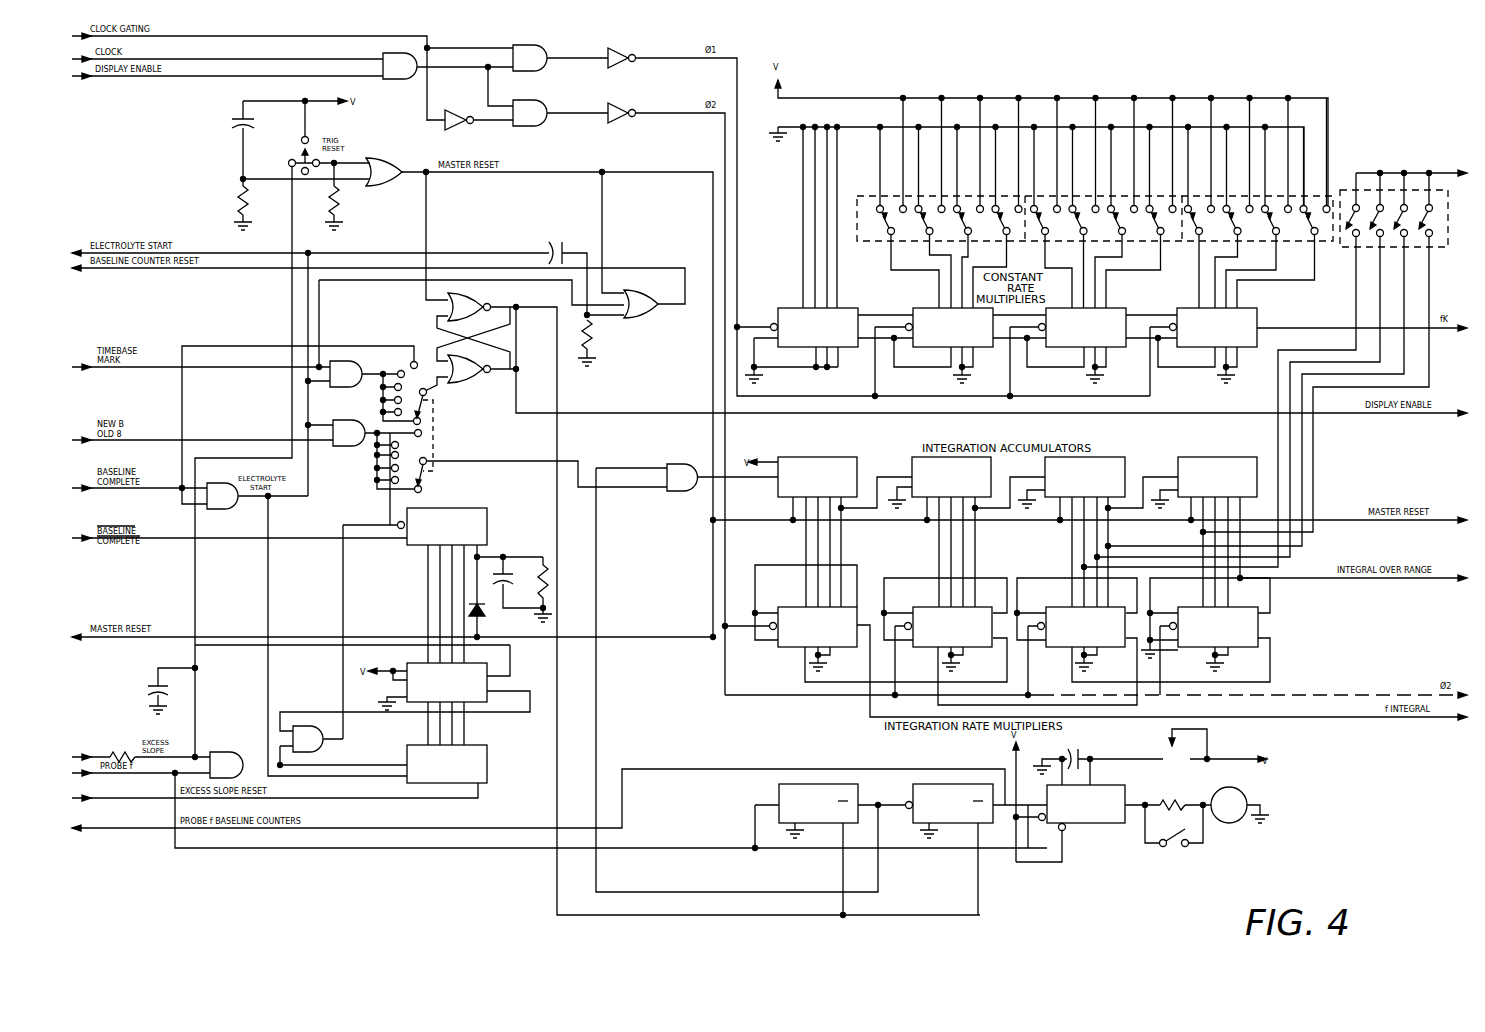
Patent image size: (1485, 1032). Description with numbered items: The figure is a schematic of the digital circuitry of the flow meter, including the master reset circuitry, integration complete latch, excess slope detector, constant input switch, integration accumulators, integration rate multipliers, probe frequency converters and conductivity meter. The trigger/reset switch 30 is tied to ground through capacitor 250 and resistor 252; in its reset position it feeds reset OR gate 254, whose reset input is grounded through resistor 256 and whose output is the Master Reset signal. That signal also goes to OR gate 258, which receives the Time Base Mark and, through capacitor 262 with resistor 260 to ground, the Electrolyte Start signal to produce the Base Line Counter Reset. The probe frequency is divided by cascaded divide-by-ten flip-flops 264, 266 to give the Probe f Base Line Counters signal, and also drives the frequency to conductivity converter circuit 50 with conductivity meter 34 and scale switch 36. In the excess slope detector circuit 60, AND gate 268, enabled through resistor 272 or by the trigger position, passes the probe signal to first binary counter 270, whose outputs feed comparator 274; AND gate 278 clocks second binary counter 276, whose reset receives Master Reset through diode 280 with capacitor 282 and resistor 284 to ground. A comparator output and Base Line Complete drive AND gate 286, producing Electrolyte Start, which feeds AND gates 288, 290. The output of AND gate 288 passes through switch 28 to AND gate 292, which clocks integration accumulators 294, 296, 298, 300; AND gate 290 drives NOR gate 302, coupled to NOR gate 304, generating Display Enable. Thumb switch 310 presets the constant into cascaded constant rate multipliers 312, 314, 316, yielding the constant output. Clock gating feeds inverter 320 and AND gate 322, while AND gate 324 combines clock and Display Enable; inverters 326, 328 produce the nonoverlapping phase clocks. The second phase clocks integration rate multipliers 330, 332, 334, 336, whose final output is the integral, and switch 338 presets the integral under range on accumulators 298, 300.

The capacitor 250 is at (236, 120).
The trigger/reset switch 30 is at (299, 158).
The resistor 252 is at (240, 206).
The reset OR gate 254 is at (386, 166).
The resistor 256 is at (339, 202).
The AND gate 324 is at (402, 76).
The inverter 326 is at (626, 54).
The AND gate 322 is at (534, 110).
The inverter 328 is at (629, 108).
The inverter 320 is at (461, 118).
The binary coded decimal thumb switch 310 is at (1142, 83).
The switch 338 is at (1348, 190).
The capacitor 262 is at (556, 242).
The OR gate 258 is at (646, 310).
The resistor 260 is at (590, 342).
The NOR gate 304 is at (438, 303).
The NOR gate 302 is at (467, 374).
The AND gate 290 is at (360, 379).
The AND gate 288 is at (364, 439).
The AND gate 286 is at (228, 504).
The switch 28 is at (440, 446).
The AND gate 292 is at (676, 466).
The integration accumulator 294 is at (832, 460).
The integration accumulator 296 is at (920, 456).
The integration accumulator 298 is at (1112, 466).
The integration accumulator 300 is at (1214, 468).
The second binary counter 276 is at (462, 515).
The excess slope detector circuit 60 is at (493, 526).
The capacitor 282 is at (510, 571).
The resistor 284 is at (549, 580).
The diode 280 is at (486, 614).
The constant rate multiplier 312 is at (970, 346).
The constant rate multiplier 314 is at (1106, 344).
The constant rate multiplier 316 is at (1238, 344).
The integration rate multiplier 336 is at (796, 607).
The integration rate multiplier 334 is at (927, 610).
The integration rate multiplier 332 is at (1062, 610).
The integration rate multiplier 330 is at (1270, 613).
The comparator 274 is at (487, 702).
The AND gate 278 is at (318, 742).
The resistor 272 is at (116, 755).
The AND gate 268 is at (227, 759).
The first binary counter 270 is at (493, 778).
The divide by 10 flip-flop 264 is at (820, 784).
The divide by 10 flip-flop 266 is at (950, 784).
The conductivity meter 34 is at (1244, 798).
The frequency to conductivity converter circuit 50 is at (1126, 831).
The scale switch 36 is at (1176, 846).